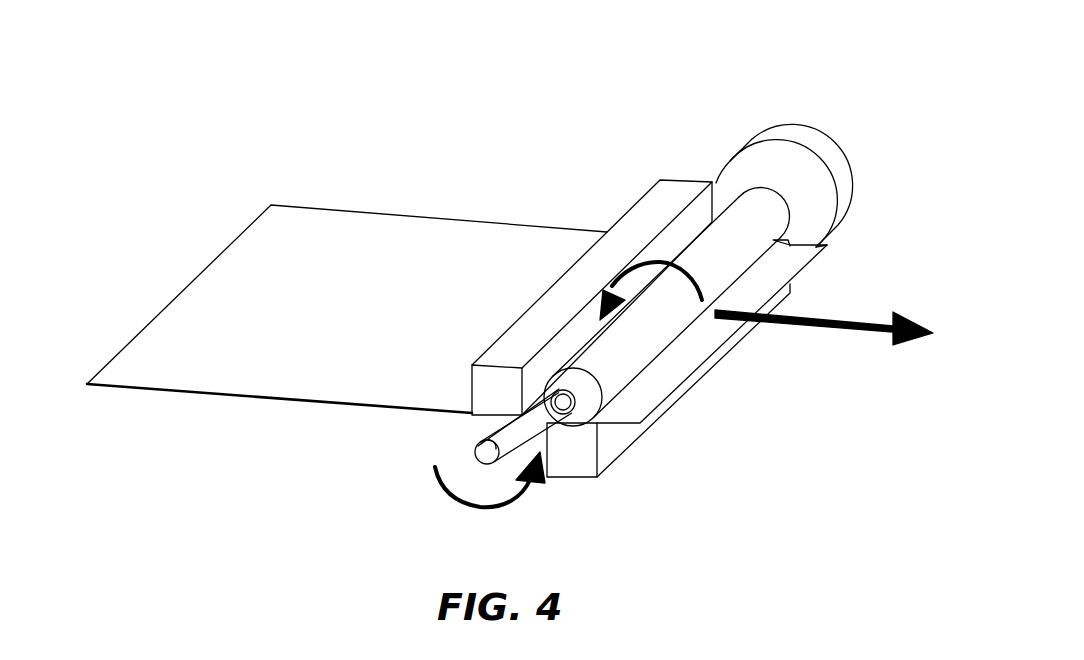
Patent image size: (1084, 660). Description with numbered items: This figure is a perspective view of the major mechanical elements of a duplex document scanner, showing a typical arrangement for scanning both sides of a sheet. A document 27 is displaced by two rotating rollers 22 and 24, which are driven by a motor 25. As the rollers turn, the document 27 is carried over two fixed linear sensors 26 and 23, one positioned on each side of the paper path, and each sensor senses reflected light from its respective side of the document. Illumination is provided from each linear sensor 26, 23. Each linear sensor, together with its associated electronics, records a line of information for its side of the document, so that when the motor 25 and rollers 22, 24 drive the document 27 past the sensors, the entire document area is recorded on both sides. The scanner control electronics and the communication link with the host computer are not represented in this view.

The rotating roller 22 is at (477, 433).
The fixed linear sensor 23 is at (578, 455).
The rotating roller 24 is at (633, 343).
The motor 25 is at (780, 128).
The fixed linear sensor 26 is at (667, 207).
The document 27 is at (465, 248).